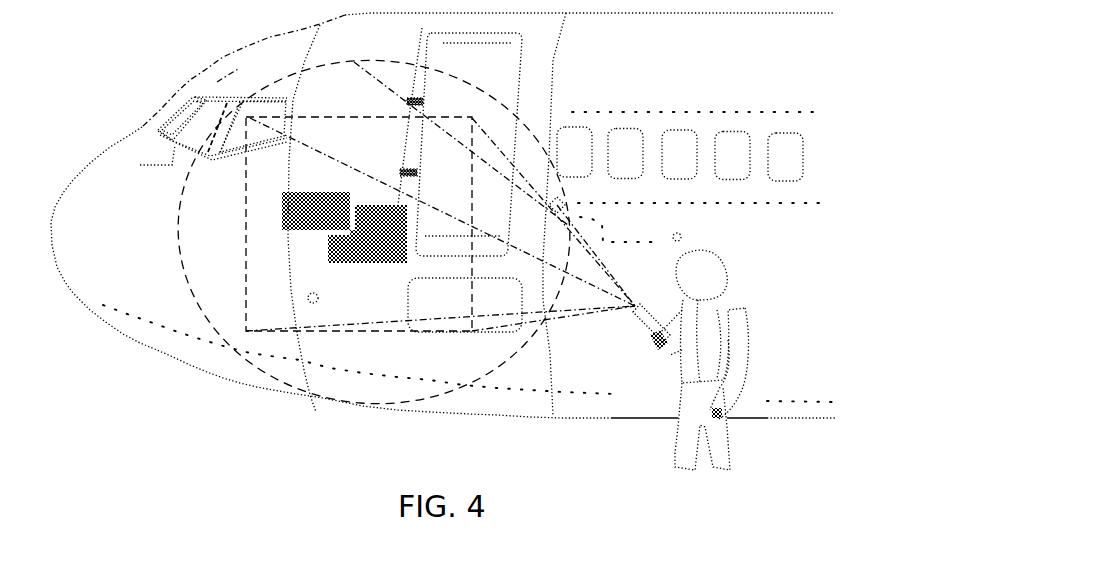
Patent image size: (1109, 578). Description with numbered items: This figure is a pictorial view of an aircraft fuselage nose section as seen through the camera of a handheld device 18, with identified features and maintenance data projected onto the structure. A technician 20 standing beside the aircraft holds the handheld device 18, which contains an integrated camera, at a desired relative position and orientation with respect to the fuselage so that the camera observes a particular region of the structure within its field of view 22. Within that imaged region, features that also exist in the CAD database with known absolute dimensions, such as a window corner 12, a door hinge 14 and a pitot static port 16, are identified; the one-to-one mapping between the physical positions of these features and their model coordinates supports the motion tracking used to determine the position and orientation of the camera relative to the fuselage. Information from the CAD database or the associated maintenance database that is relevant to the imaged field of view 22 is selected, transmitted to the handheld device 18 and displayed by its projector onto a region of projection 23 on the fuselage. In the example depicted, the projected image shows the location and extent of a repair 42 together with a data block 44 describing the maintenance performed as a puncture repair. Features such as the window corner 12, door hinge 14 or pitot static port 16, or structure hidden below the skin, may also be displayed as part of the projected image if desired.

The window corner 12 is at (268, 130).
The door hinge 14 is at (410, 170).
The pitot static port 16 is at (308, 296).
The handheld device 18 is at (642, 322).
The technician 20 is at (720, 265).
The field of view 22 is at (493, 99).
The region of projection 23 is at (386, 117).
The repair 42 is at (300, 227).
The data block 44 is at (378, 265).